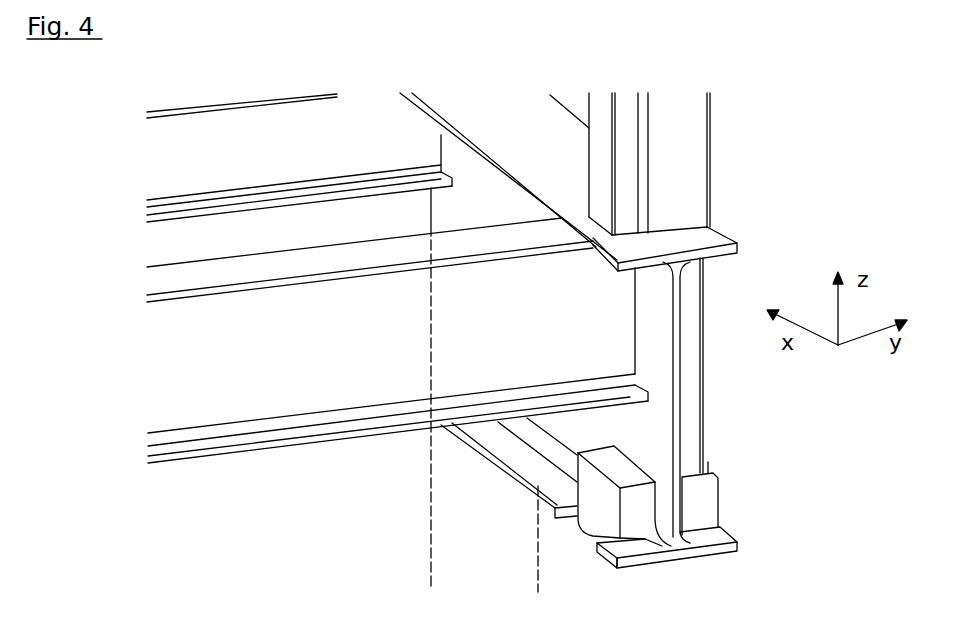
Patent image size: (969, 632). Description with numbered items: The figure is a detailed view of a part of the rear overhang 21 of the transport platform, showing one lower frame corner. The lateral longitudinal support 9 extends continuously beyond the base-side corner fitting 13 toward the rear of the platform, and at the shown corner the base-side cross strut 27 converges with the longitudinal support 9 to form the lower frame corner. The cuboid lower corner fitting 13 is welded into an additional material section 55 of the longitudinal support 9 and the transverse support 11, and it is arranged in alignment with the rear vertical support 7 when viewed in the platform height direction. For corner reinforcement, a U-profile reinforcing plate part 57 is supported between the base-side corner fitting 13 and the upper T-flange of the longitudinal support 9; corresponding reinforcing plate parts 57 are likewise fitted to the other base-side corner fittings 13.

The rear vertical support 7 is at (712, 127).
The longitudinal support 9 is at (480, 154).
The transverse support 11 is at (378, 345).
The lower corner fitting 13 is at (717, 493).
The rear overhang 21 is at (436, 472).
The cross strut 27 is at (280, 163).
The additional material section 55 is at (588, 454).
The reinforcing plate part 57 is at (705, 292).